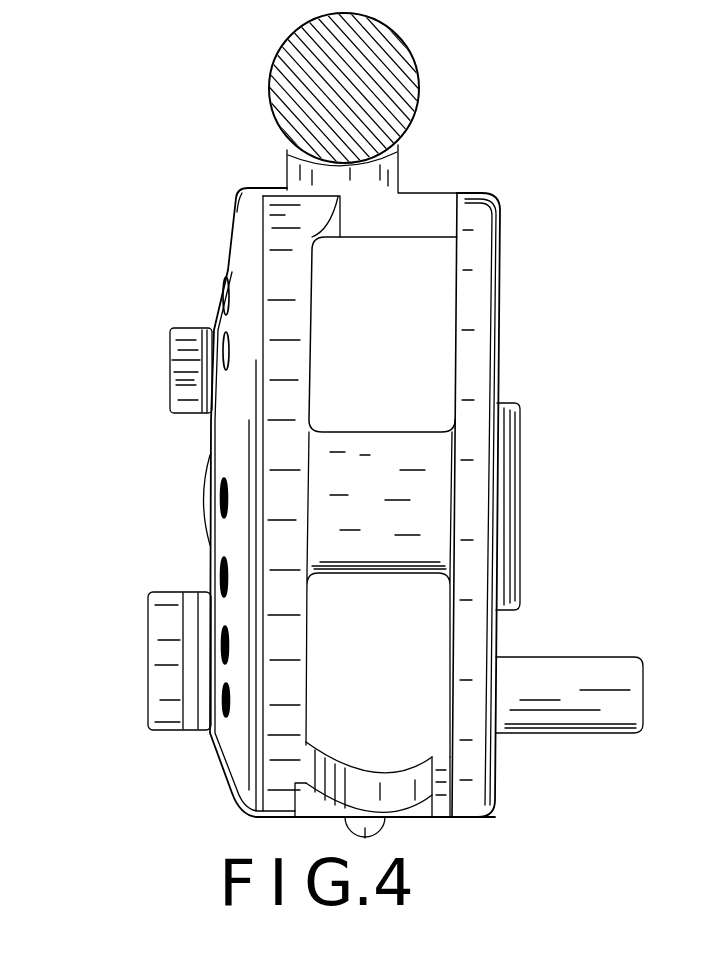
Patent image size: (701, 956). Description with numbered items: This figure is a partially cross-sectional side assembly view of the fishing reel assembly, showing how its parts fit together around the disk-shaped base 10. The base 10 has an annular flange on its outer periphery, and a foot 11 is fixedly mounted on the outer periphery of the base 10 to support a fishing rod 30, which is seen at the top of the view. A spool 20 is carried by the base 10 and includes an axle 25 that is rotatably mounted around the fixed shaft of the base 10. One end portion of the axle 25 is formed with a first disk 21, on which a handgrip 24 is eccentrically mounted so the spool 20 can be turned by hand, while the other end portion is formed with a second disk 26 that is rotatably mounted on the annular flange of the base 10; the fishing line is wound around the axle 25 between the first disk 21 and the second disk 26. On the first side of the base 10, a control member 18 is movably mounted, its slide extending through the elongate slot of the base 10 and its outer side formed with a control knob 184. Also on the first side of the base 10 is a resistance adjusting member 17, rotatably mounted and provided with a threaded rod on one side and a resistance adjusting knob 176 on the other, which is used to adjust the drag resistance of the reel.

The fishing rod 30 is at (400, 93).
The foot 11 is at (388, 162).
The spool 20 is at (512, 316).
The first disk 21 is at (482, 360).
The second disk 26 is at (282, 292).
The axle 25 is at (440, 508).
The handgrip 24 is at (575, 670).
The base 10 is at (200, 442).
The control member 18 is at (166, 359).
The control knob 184 is at (182, 372).
The resistance adjusting knob 176 is at (167, 628).
The resistance adjusting member 17 is at (138, 694).